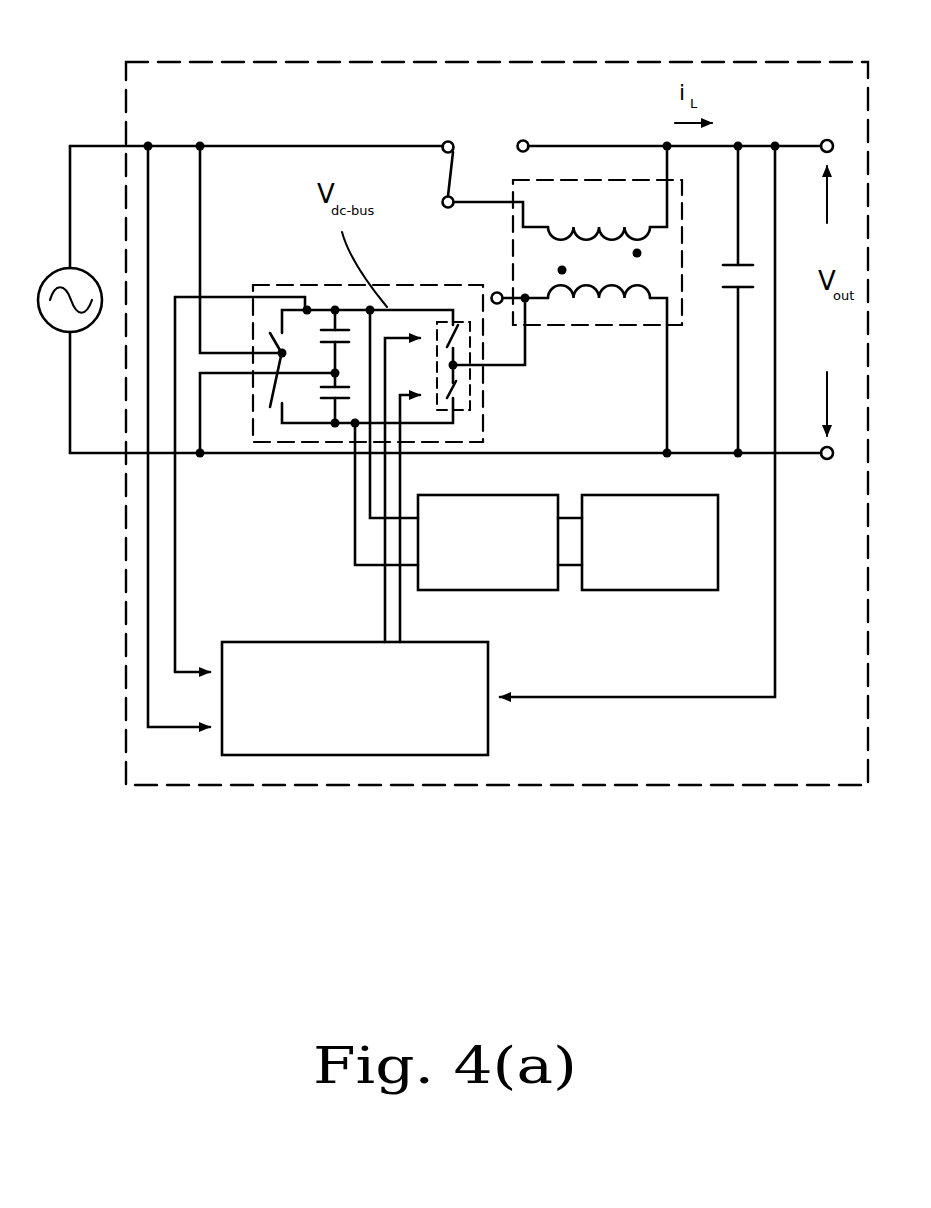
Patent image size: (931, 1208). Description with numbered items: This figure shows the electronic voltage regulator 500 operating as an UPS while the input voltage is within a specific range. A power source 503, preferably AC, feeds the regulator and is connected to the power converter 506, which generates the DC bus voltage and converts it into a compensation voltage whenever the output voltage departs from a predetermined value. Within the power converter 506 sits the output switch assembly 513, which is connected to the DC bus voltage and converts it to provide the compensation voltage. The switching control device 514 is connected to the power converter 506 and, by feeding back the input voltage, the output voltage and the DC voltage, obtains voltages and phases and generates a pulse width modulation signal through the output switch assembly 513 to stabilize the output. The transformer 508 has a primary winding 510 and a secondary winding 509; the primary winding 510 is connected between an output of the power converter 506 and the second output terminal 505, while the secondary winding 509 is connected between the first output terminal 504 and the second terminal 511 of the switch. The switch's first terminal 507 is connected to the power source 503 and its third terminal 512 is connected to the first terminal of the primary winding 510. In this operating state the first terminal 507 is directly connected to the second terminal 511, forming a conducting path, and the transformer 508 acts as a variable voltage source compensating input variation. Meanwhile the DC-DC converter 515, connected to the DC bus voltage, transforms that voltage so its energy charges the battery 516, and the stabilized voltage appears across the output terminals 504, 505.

The electronic voltage regulator 500 is at (352, 77).
The power source 503 is at (62, 315).
The first terminal of the output terminals 504 is at (836, 126).
The second terminal of the output terminals 505 is at (831, 470).
The power converter 506 is at (317, 295).
The first terminal of the switch 507 is at (445, 141).
The transformer 508 is at (597, 299).
The secondary winding 509 is at (558, 230).
The primary winding 510 is at (586, 297).
The second terminal of the switch 511 is at (453, 197).
The third terminal of the switch 512 is at (503, 292).
The output switch assembly 513 is at (440, 325).
The switching control device 514 is at (488, 687).
The DC-DC converter 515 is at (522, 590).
The battery 516 is at (668, 590).